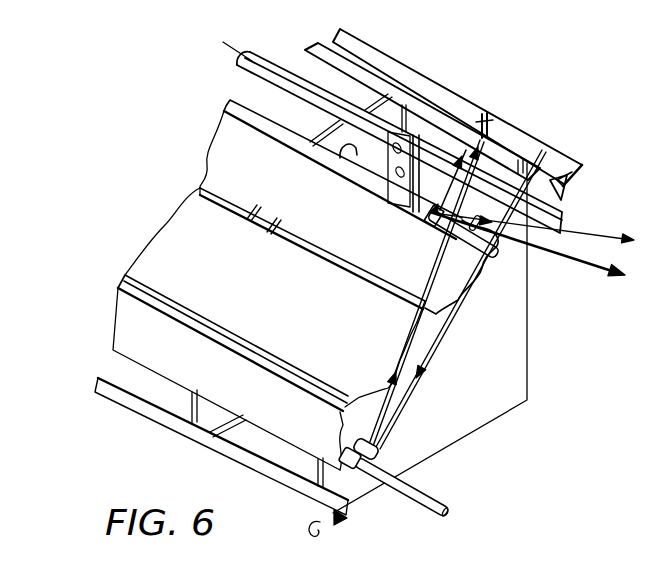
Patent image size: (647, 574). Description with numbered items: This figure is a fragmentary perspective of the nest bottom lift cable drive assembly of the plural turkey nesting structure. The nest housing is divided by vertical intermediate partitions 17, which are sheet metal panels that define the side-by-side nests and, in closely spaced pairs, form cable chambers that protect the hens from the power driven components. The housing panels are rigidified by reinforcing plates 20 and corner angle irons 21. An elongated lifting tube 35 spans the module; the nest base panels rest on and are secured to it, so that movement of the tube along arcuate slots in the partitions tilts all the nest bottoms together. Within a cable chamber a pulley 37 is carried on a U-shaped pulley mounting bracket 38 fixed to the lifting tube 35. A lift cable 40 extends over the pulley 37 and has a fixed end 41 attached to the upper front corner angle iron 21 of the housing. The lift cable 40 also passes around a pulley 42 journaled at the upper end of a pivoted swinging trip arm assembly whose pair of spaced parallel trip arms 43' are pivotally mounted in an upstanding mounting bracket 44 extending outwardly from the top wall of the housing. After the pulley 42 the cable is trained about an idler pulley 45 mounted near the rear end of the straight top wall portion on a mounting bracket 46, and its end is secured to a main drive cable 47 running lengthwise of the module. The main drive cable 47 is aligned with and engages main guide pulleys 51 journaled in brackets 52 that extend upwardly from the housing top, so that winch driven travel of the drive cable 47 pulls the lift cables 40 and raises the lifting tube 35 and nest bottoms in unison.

The vertical intermediate partitions 17 is at (486, 412).
The reinforcing plates 20 is at (132, 333).
The corner angle irons 21 is at (568, 186).
The lifting tube 35 is at (425, 500).
The pulley 37 is at (375, 457).
The U-shaped pulley mounting bracket 38 is at (368, 474).
The lift cable 40 is at (405, 358).
The fixed end 41 is at (543, 203).
The pulley 42 is at (478, 113).
The trip arms 43' is at (457, 106).
The mounting bracket 44 is at (545, 153).
The idler pulley 45 is at (431, 220).
The mounting bracket 46 is at (439, 229).
The main drive cable 47 is at (254, 68).
The main guide pulleys 51 is at (432, 130).
The brackets 52 is at (393, 185).